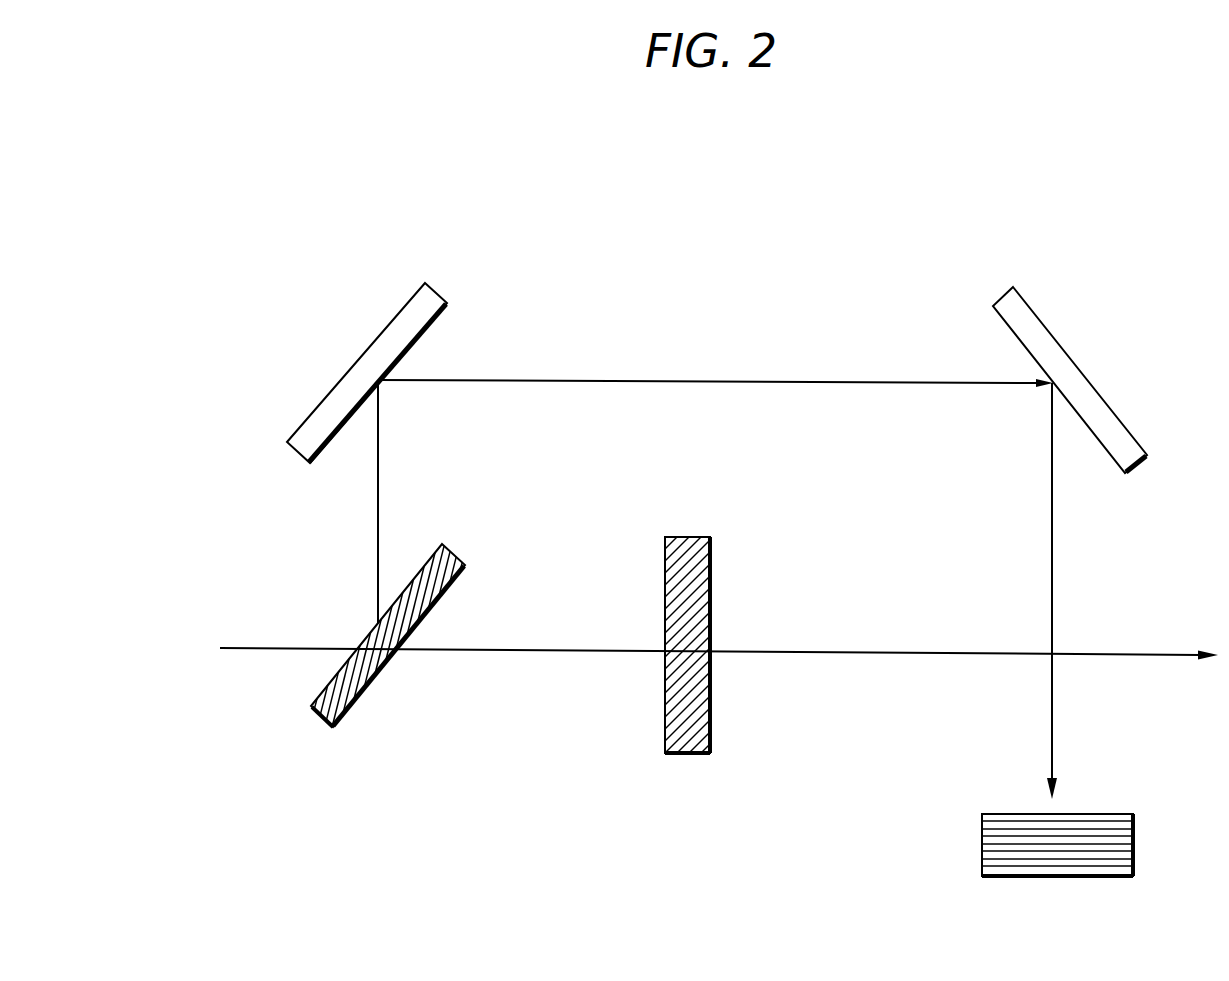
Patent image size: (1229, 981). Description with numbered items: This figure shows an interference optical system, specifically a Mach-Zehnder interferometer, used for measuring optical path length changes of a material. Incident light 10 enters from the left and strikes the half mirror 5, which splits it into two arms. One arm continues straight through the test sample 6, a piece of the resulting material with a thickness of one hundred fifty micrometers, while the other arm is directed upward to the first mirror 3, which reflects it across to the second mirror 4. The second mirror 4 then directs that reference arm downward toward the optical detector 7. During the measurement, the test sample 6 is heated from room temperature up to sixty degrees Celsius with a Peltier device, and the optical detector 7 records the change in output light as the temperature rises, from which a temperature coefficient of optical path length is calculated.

The first mirror 3 is at (353, 364).
The second mirror 4 is at (1080, 370).
The half mirror 5 is at (390, 660).
The test sample 6 is at (712, 677).
The optical detector 7 is at (1073, 813).
The incident light 10 is at (695, 648).